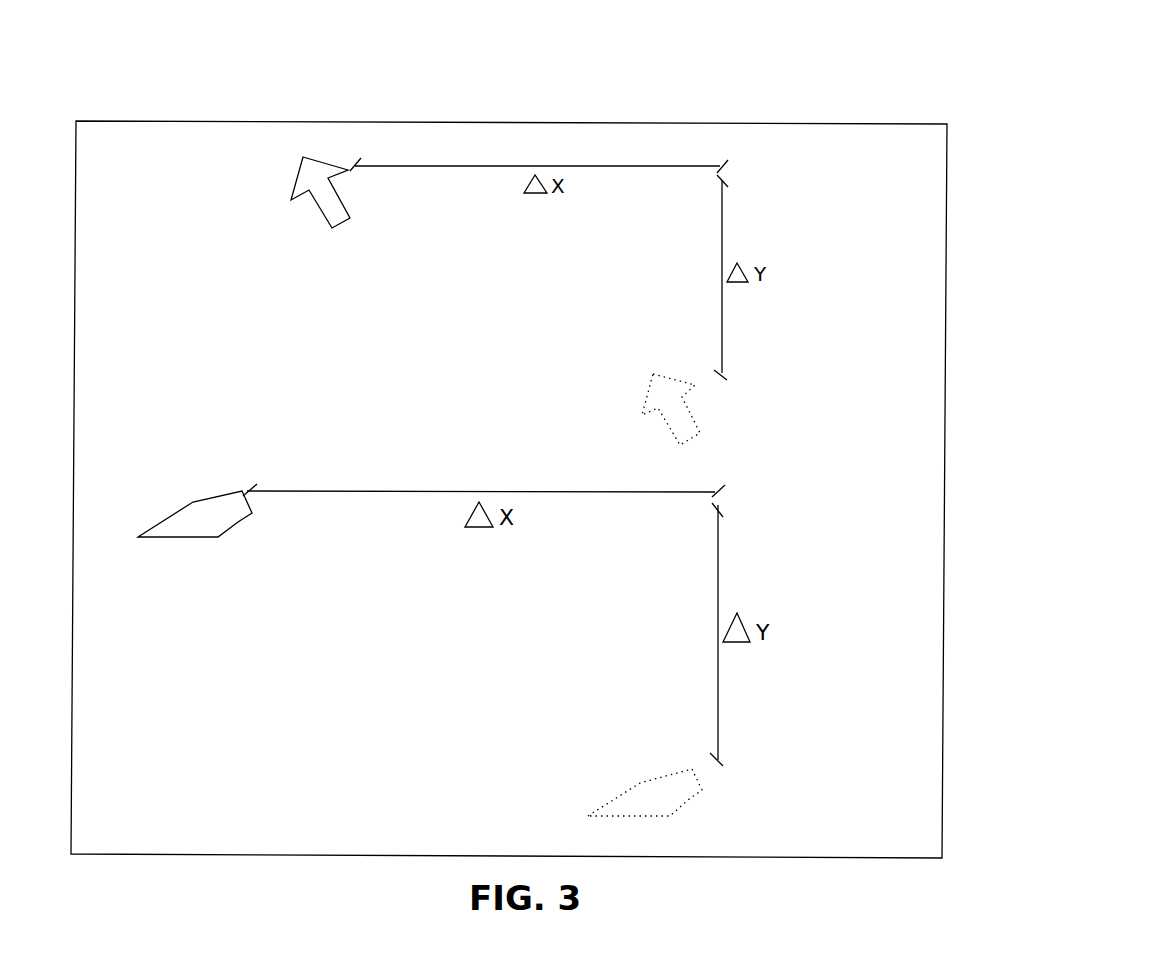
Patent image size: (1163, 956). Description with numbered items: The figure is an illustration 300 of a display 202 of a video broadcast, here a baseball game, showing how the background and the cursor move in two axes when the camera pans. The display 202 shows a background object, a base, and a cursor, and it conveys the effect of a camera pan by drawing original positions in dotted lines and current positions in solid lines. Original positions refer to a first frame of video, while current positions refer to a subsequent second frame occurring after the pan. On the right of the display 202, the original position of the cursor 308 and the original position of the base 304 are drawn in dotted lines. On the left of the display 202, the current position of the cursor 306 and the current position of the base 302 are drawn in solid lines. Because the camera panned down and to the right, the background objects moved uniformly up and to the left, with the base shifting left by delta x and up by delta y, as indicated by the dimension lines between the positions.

The illustration 300 is at (1134, 34).
The display 202 is at (933, 121).
The current position of the base 302 is at (237, 525).
The original position of the base 304 is at (688, 802).
The current position of the cursor 306 is at (346, 189).
The original position of the cursor 308 is at (700, 407).